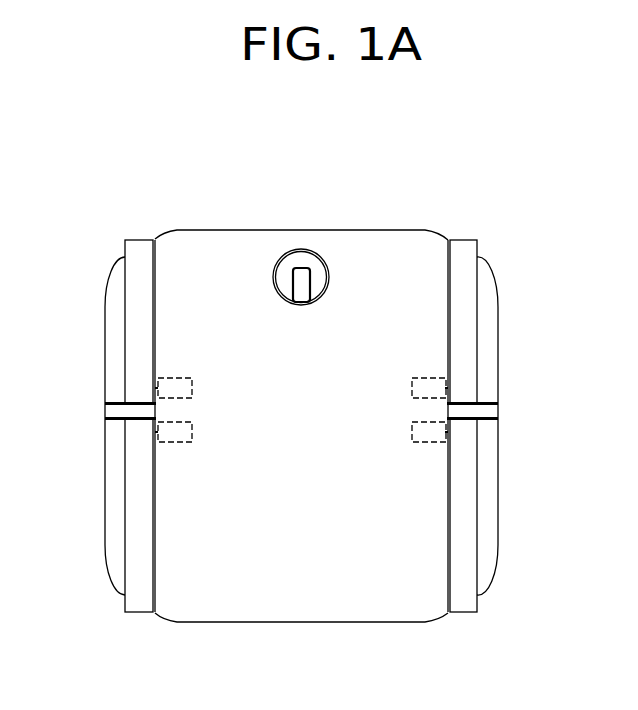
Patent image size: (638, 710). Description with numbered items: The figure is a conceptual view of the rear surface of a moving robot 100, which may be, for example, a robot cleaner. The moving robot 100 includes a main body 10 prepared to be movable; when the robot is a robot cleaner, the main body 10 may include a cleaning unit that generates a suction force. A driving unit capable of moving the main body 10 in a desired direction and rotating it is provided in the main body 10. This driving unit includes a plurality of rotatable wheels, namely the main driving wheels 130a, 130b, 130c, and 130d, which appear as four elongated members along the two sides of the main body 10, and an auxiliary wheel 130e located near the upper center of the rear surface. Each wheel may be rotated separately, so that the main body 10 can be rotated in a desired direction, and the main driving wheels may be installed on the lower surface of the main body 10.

The moving robot 100 is at (595, 202).
The main body 10 is at (228, 237).
The main driving wheel 130a is at (138, 238).
The main driving wheel 130b is at (462, 238).
The main driving wheel 130c is at (140, 612).
The main driving wheel 130d is at (462, 613).
The auxiliary wheel 130e is at (302, 272).